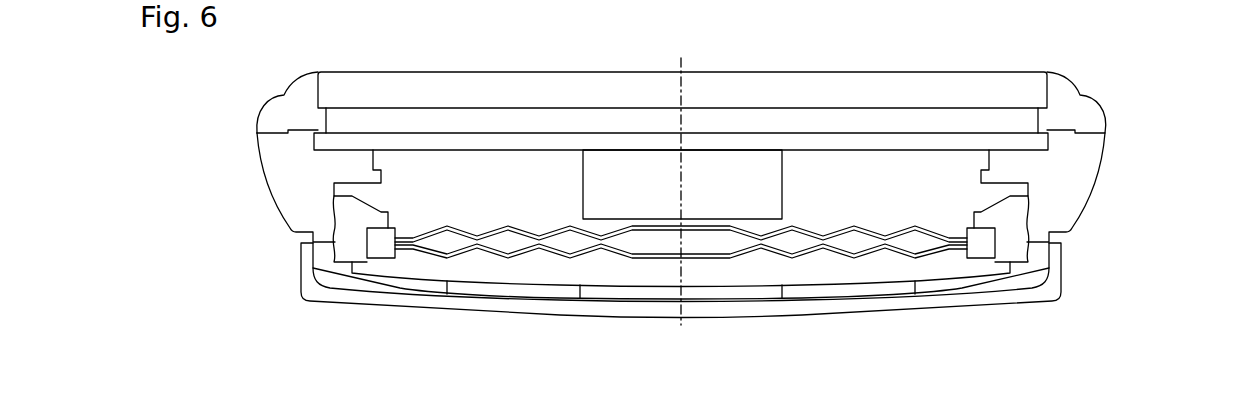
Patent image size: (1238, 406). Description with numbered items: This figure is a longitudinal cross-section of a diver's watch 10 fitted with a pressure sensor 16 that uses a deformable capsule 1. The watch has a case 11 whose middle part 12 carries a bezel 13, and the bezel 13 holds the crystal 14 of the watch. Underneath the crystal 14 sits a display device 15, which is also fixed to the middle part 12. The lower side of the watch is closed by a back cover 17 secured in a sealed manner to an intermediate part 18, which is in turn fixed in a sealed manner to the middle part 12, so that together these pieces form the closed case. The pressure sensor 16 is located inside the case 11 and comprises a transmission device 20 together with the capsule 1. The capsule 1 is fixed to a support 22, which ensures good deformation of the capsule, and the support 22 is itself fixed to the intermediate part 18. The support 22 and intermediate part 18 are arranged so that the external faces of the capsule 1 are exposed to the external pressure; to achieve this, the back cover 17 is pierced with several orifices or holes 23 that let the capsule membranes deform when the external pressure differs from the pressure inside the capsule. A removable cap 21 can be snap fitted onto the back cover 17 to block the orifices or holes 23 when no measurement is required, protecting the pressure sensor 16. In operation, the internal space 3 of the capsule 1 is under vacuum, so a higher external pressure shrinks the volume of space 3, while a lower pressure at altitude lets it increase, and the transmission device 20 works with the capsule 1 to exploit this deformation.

The diver's watch 10 is at (1134, 56).
The case 11 is at (236, 97).
The middle part 12 is at (285, 178).
The bezel 13 is at (290, 100).
The crystal 14 is at (478, 95).
The display device 15 is at (745, 140).
The pressure sensor 16 is at (800, 172).
The transmission device 20 is at (655, 172).
The intermediate part 18 is at (343, 262).
The back cover 17 is at (408, 283).
The orifices or holes 23 is at (568, 295).
The removable cap 21 is at (722, 309).
The space 3 is at (796, 250).
The capsule 1 is at (858, 234).
The support 22 is at (982, 250).